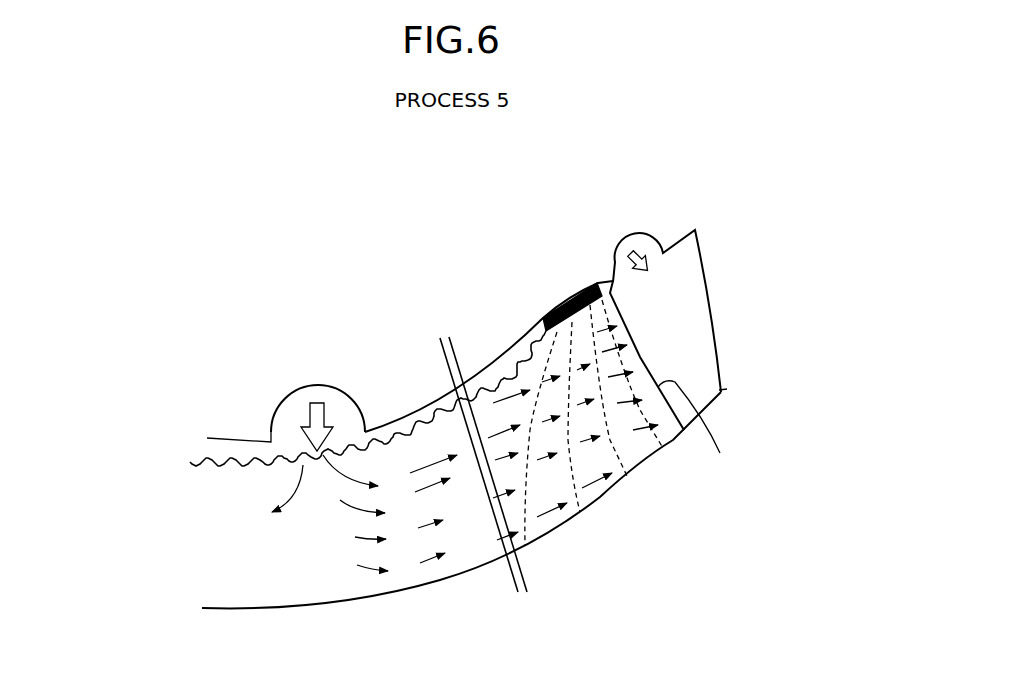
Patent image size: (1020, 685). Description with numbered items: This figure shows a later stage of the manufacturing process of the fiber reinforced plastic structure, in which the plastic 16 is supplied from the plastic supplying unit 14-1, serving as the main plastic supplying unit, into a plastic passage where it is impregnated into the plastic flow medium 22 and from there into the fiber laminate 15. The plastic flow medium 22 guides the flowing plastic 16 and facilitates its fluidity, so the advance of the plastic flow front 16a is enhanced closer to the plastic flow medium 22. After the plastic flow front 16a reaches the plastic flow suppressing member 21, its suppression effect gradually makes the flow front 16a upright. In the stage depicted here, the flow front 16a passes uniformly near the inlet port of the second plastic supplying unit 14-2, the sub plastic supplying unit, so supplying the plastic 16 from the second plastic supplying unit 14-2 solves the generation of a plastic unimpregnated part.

The first plastic supplying unit 14-1 is at (273, 413).
The second plastic supplying unit 14-2 is at (616, 243).
The mold surface 15 is at (303, 602).
The plastic 16 is at (616, 266).
The flow front 16a is at (720, 453).
The plastic flow suppressing member 21 is at (563, 300).
The plastic flow medium 22 is at (390, 448).